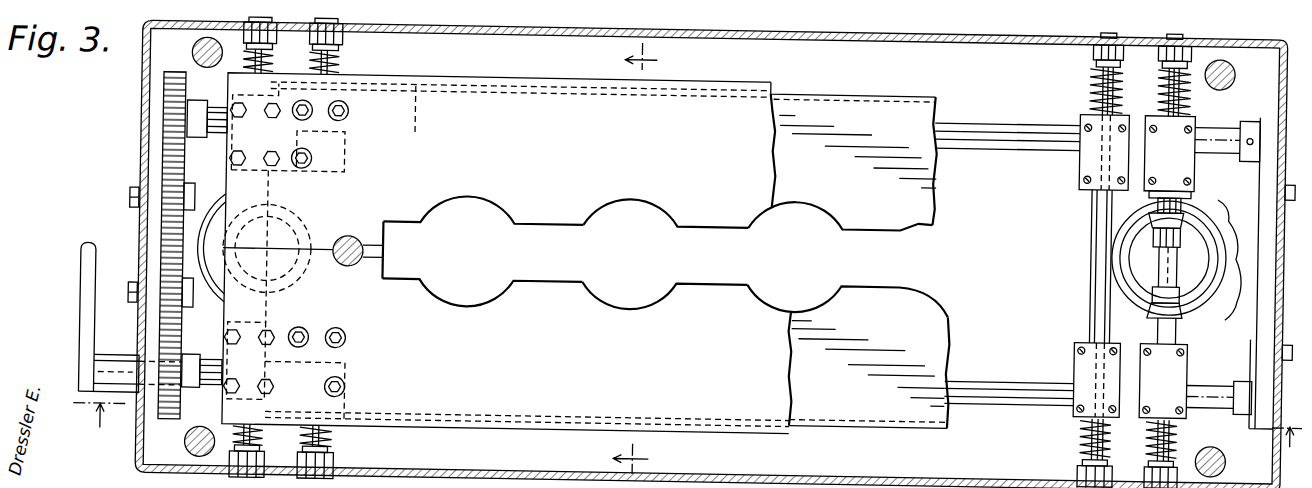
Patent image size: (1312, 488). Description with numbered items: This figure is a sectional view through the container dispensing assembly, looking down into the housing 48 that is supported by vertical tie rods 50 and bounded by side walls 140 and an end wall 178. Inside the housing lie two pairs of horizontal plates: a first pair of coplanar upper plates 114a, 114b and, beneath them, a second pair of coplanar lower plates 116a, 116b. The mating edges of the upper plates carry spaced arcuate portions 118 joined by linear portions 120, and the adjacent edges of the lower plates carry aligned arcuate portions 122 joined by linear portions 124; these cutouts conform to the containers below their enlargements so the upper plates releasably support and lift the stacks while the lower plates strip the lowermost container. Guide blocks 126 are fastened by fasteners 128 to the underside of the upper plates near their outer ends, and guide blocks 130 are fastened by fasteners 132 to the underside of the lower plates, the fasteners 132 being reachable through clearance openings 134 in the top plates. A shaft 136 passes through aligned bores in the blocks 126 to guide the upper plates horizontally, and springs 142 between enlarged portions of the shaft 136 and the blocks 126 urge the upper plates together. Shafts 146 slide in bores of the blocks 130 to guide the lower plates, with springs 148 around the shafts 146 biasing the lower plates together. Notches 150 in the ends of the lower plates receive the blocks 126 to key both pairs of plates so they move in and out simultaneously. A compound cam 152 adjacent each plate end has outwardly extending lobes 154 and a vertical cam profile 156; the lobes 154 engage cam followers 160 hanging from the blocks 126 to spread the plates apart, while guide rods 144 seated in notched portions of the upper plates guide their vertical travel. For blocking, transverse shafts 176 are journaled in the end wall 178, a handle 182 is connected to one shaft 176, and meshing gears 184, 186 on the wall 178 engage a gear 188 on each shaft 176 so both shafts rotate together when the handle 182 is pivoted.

The housing 48 is at (130, 180).
The vertical tie rods 50 is at (190, 58).
The upper plate 114a is at (768, 98).
The upper plate 114b is at (718, 432).
The lower plate 116a is at (920, 111).
The lower plate 116b is at (890, 418).
The arcuate portions 118 is at (602, 214).
The linear portions 120 is at (565, 228).
The arcuate portions 122 is at (918, 220).
The linear portions 124 is at (868, 284).
The guide blocks 126 is at (225, 150).
The fasteners 128 is at (1190, 120).
The guide blocks 130 is at (347, 344).
The fasteners 132 is at (343, 114).
The clearance openings 134 is at (308, 161).
The shaft 136 is at (242, 436).
The side walls 140 is at (955, 38).
The springs 142 is at (1188, 89).
The guide rods 144 is at (386, 260).
The shafts 146 is at (1091, 206).
The springs 148 is at (270, 66).
The notches 150 is at (346, 122).
The compound cam 152 is at (305, 216).
The lobes 154 is at (208, 258).
The vertical cam profile 156 is at (205, 232).
The cam followers 160 is at (1190, 188).
The shafts 176 is at (970, 132).
The end wall 178 is at (205, 126).
The handle 182 is at (82, 306).
The gear 184 is at (183, 205).
The gear 186 is at (163, 268).
The gear 188 is at (163, 88).